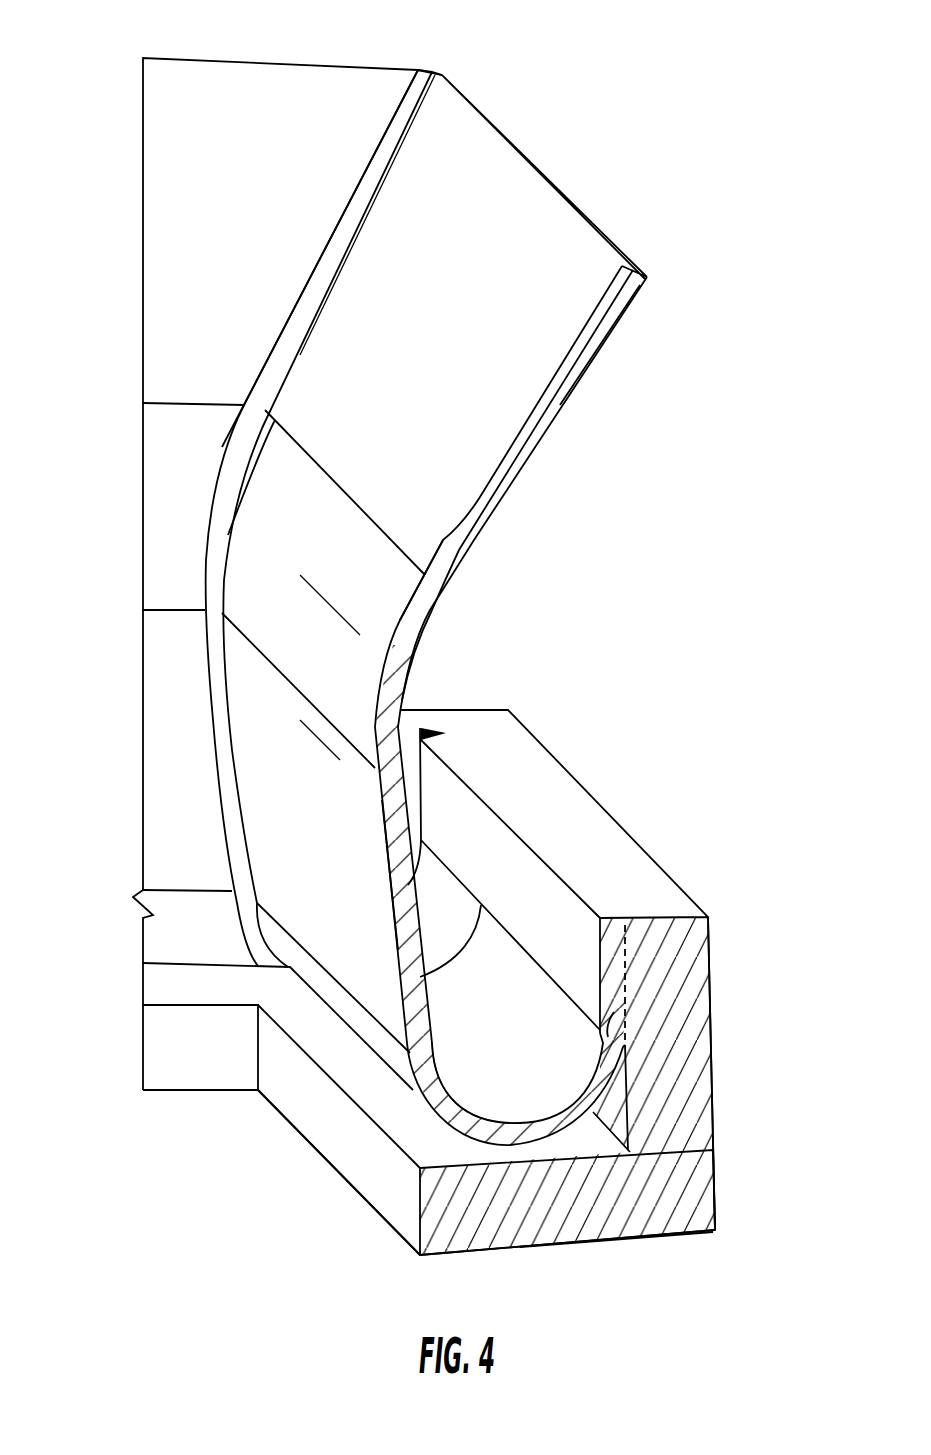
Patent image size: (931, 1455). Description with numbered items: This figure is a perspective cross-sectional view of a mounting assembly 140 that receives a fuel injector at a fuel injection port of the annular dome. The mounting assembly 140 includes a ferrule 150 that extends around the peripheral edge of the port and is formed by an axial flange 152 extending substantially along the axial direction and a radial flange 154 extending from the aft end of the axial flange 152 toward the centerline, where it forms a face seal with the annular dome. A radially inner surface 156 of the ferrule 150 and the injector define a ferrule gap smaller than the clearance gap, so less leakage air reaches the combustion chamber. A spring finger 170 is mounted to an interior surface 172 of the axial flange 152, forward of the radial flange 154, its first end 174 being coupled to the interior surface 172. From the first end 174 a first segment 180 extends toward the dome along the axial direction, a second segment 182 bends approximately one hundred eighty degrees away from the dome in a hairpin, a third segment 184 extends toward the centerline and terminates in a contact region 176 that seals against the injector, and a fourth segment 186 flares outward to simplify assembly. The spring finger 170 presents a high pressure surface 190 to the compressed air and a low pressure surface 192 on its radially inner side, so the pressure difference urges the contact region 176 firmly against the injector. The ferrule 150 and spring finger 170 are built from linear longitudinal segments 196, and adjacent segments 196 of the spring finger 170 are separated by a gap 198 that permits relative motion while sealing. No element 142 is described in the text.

The mounting assembly 140 is at (675, 115).
The bottom surface of base 142 is at (593, 1250).
The ferrule 150 is at (718, 1148).
The axial flange 152 is at (688, 988).
The radial flange 154 is at (515, 1230).
The radially inner surface 156 is at (342, 1180).
The spring finger 170 is at (500, 536).
The interior surface 172 is at (620, 964).
The first end 174 is at (593, 972).
The contact region 176 is at (293, 617).
The first segment 180 is at (600, 1030).
The second segment 182 is at (528, 1135).
The third segment 184 is at (400, 893).
The fourth segment 186 is at (573, 375).
The high pressure surface 190 is at (433, 604).
The low pressure surface 192 is at (278, 748).
The longitudinal segments 196 is at (279, 105).
The gap 198 is at (443, 70).